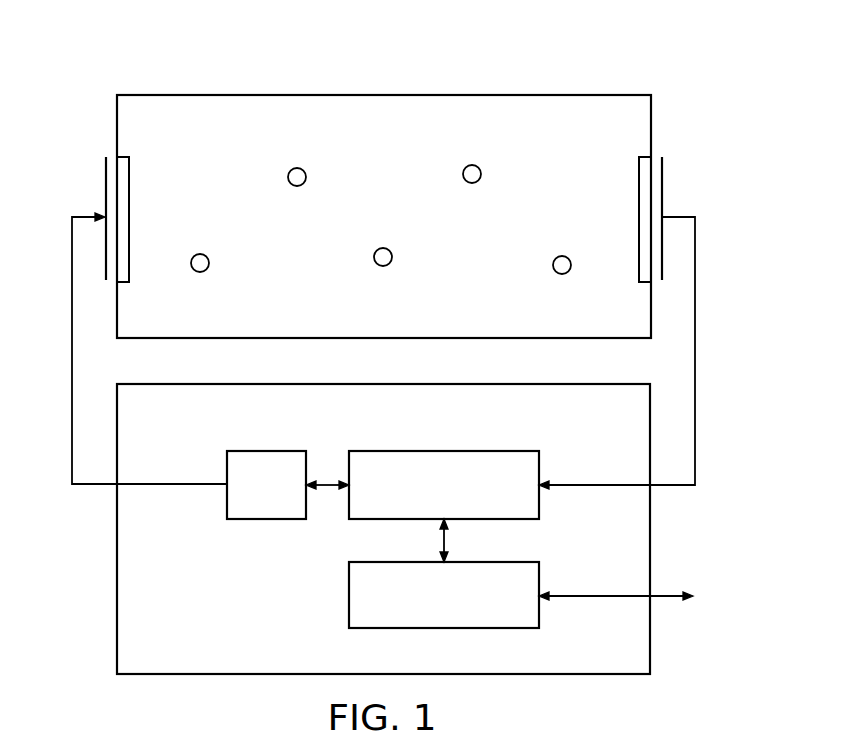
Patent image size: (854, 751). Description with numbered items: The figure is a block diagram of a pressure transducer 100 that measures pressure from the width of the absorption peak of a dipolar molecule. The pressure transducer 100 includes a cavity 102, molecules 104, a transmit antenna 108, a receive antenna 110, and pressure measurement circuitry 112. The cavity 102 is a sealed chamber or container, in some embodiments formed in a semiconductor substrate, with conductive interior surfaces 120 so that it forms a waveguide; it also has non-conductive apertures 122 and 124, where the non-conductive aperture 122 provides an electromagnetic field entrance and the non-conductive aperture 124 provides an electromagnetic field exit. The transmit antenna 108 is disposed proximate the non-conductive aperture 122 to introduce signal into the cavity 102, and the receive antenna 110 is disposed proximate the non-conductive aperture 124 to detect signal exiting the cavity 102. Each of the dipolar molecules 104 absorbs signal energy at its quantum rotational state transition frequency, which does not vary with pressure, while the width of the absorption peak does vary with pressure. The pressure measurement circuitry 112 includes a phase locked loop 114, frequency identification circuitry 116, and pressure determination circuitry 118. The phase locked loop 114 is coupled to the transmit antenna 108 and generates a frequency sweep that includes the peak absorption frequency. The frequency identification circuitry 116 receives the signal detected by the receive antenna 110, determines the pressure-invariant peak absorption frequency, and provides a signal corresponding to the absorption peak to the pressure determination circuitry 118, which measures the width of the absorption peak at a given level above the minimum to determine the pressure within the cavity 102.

The pressure transducer 100 is at (300, 73).
The cavity 102 is at (527, 163).
The molecules 104 is at (200, 272).
The transmit antenna 108 is at (103, 180).
The receive antenna 110 is at (663, 180).
The pressure measurement circuitry 112 is at (107, 588).
The phase locked loop (PLL) 114 is at (266, 451).
The frequency identification circuitry 116 is at (457, 451).
The pressure determination circuitry 118 is at (540, 612).
The conductive interior surfaces 120 is at (248, 96).
The non-conductive aperture 122 is at (131, 190).
The non-conductive aperture 124 is at (637, 190).